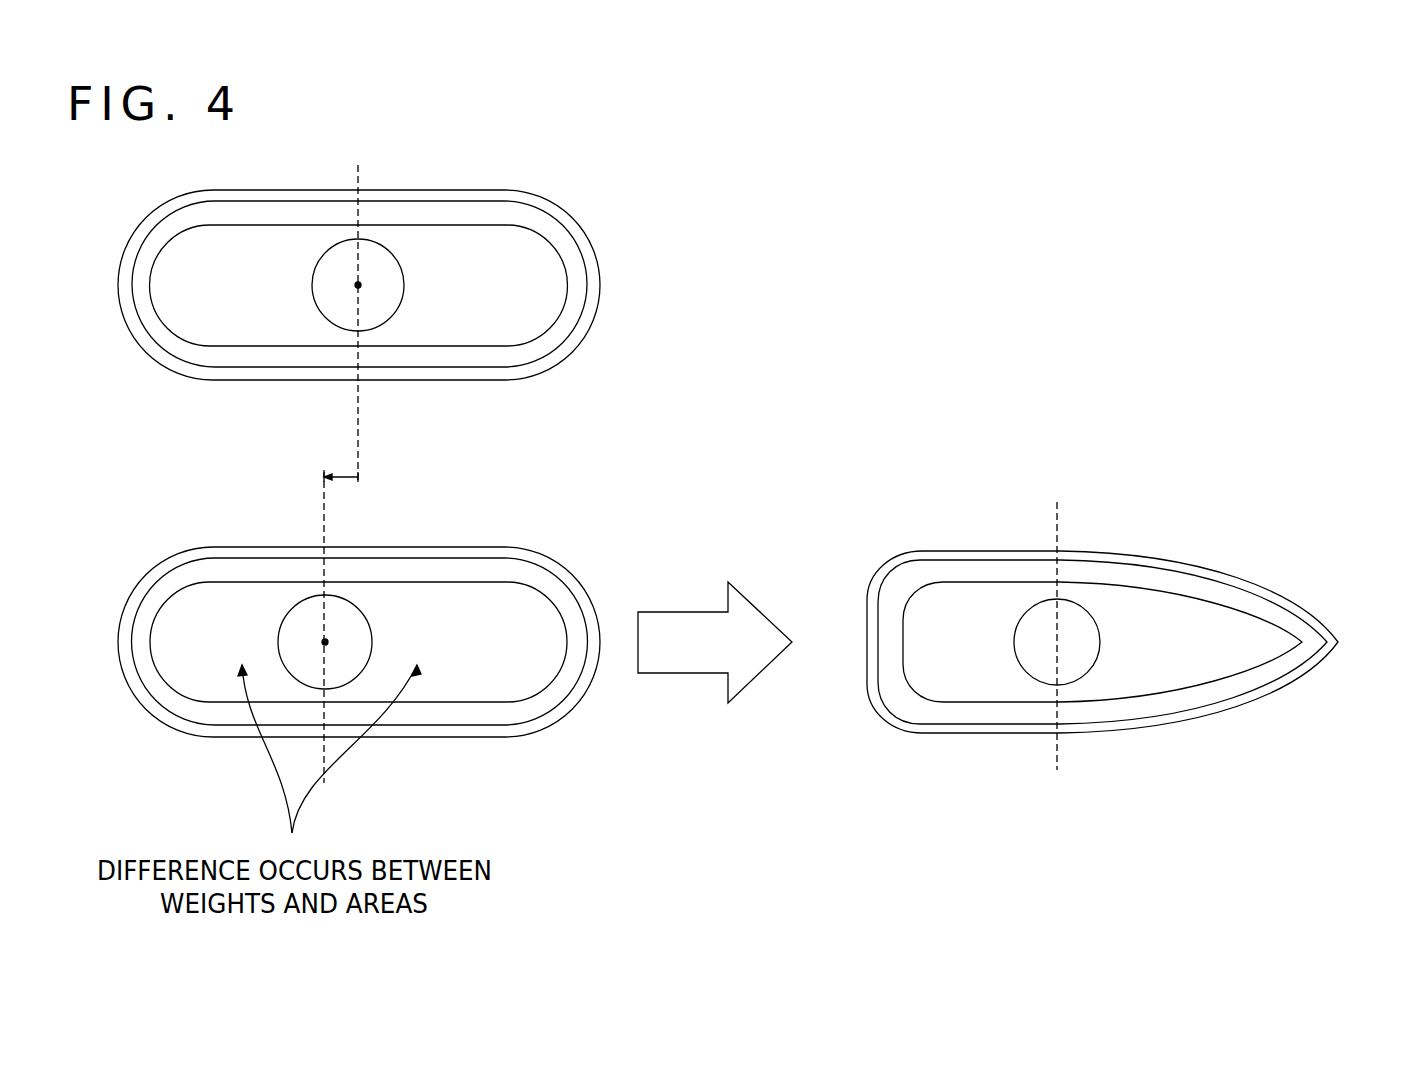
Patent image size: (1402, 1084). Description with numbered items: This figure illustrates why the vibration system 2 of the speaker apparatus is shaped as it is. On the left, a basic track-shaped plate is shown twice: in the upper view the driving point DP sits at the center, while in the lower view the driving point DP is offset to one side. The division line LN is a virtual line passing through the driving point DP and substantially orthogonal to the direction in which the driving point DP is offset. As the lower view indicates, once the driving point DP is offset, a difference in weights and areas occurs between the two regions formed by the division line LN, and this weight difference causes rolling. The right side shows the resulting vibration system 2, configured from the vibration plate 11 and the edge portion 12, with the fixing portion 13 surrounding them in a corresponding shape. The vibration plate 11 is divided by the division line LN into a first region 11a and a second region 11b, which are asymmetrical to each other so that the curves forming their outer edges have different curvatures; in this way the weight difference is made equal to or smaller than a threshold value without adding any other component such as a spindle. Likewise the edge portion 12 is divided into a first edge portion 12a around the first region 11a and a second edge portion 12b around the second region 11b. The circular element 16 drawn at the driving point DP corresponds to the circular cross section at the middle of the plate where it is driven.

The vibration system 2 is at (903, 502).
The vibration plate 11 is at (1102, 642).
The first region 11a is at (977, 680).
The second region 11b is at (1222, 670).
The edge portion 12 is at (1103, 615).
The first edge portion 12a is at (892, 645).
The second edge portion 12b is at (1313, 642).
The fixing portion 13 is at (1225, 573).
The circular portion 16 is at (1088, 608).
The driving point DP is at (362, 283).
The division line LN is at (325, 783).